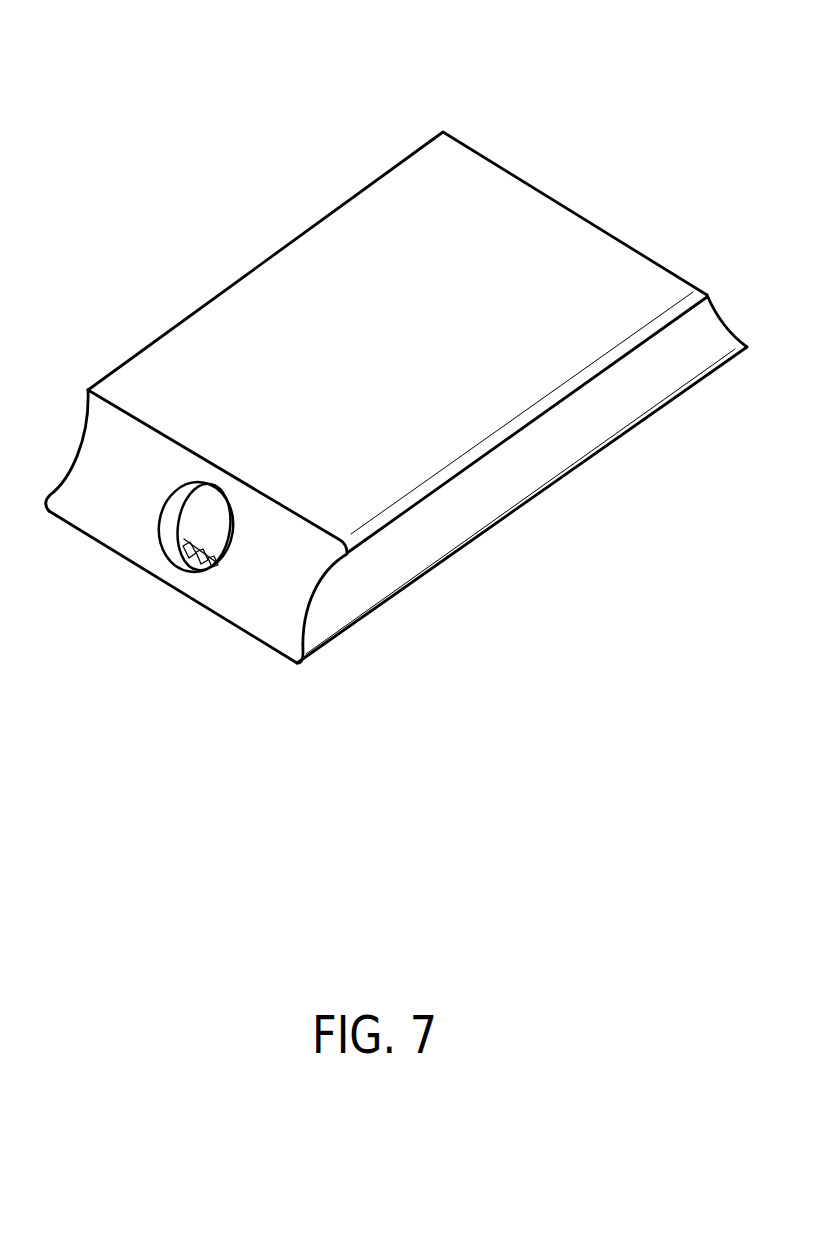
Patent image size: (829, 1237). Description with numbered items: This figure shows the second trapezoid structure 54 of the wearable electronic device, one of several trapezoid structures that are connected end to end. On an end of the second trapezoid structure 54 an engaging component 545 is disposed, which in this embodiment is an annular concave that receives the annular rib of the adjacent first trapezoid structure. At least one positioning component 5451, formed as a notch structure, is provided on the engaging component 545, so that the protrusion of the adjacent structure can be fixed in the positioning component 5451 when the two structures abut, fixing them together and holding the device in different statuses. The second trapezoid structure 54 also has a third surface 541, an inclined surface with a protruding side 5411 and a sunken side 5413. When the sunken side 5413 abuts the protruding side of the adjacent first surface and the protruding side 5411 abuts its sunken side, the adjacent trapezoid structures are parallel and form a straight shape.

The second trapezoid structure 54 is at (396, 437).
The third surface 541 is at (396, 566).
The protruding side 5411 is at (390, 762).
The sunken side 5413 is at (337, 549).
The engaging component 545 is at (156, 578).
The positioning component 5451 is at (195, 576).